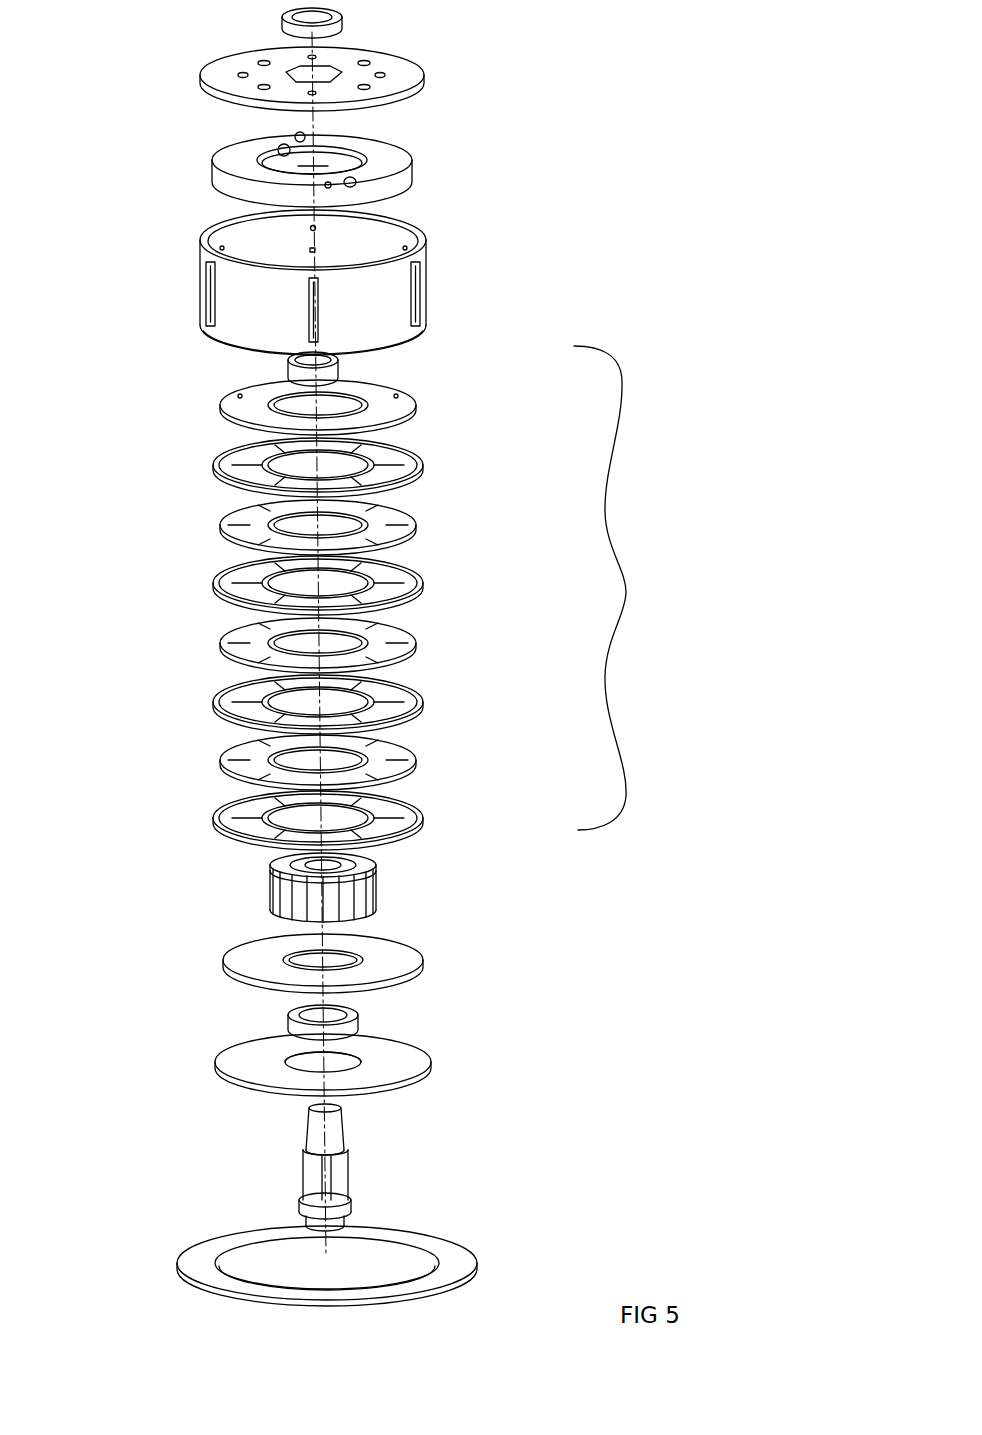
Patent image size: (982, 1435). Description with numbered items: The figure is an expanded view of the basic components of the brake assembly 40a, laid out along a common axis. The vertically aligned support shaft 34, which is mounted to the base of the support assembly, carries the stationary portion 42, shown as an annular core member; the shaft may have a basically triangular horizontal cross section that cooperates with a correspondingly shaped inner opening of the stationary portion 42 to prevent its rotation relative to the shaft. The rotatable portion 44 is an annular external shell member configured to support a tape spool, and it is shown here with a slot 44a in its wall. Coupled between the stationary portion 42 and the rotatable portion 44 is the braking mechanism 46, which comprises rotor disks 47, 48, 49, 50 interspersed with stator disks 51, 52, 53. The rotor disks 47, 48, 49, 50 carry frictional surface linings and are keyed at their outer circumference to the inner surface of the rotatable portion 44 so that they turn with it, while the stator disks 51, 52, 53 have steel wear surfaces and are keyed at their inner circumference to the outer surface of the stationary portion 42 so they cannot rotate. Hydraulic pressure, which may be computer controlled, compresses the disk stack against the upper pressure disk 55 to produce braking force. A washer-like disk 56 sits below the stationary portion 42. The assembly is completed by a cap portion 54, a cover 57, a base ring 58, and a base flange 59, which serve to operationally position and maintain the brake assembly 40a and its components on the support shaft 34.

The brake assembly 40a is at (96, 51).
The cover 57 is at (415, 62).
The cap portion 54 is at (410, 175).
The rotatable portion 44 is at (428, 278).
The housing slot 44a is at (440, 298).
The upper pressure disk 55 is at (216, 400).
The rotor disk 47 is at (420, 455).
The stator disk 51 is at (216, 520).
The rotor disk 48 is at (420, 575).
The stator disk 52 is at (216, 640).
The rotor disk 49 is at (420, 695).
The stator disk 53 is at (216, 758).
The rotor disk 50 is at (420, 810).
The braking mechanism 46 is at (621, 588).
The stationary portion 42 is at (378, 897).
The washer disc 56 is at (222, 965).
The base ring 58 is at (431, 1060).
The support shaft 34 is at (305, 1177).
The base flange 59 is at (456, 1243).